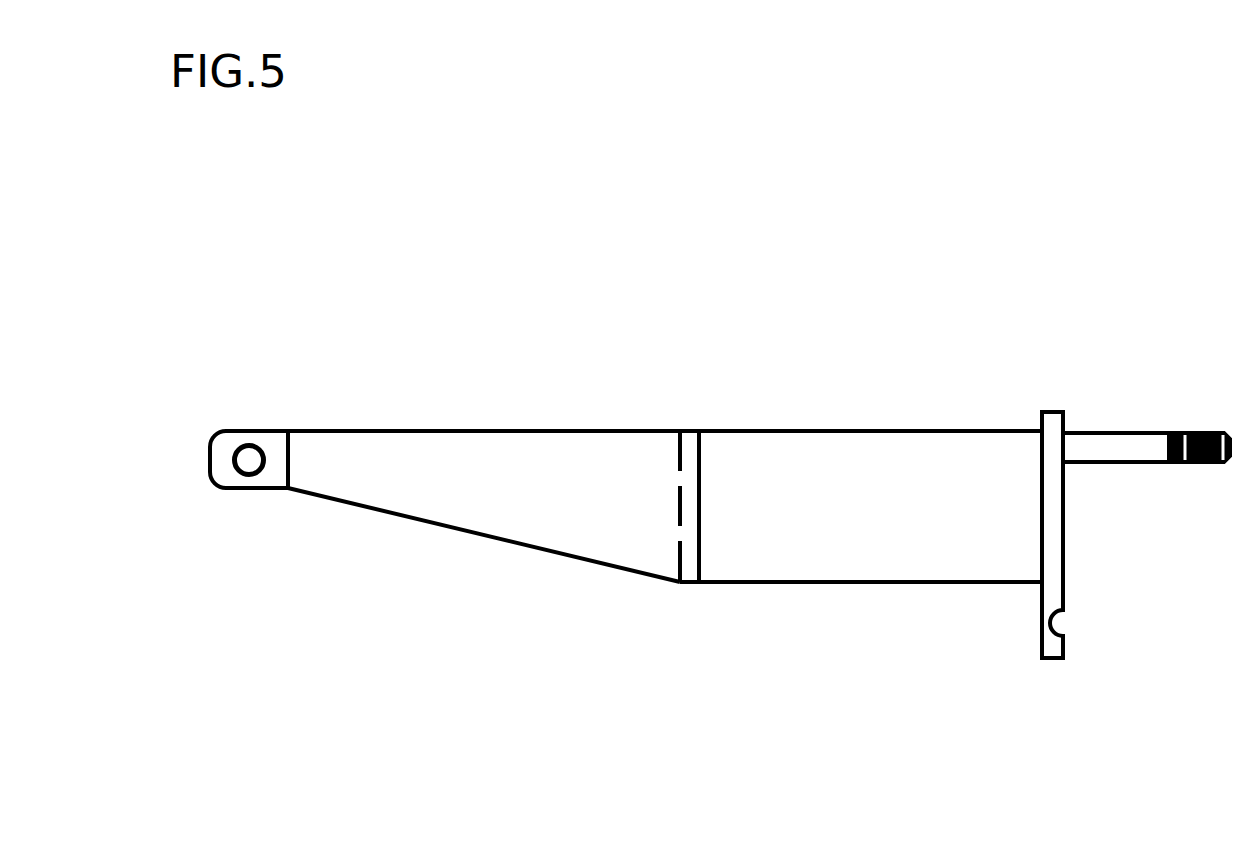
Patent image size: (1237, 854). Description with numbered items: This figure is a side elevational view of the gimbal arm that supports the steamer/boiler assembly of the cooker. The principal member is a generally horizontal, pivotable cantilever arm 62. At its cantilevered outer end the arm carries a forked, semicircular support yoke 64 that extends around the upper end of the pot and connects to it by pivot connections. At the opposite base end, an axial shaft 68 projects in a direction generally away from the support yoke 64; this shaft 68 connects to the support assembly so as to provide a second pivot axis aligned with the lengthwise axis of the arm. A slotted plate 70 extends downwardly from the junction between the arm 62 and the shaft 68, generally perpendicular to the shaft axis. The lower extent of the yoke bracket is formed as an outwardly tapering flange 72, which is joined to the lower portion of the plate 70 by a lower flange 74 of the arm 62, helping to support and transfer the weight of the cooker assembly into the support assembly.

The cantilever arm 62 is at (802, 429).
The support yoke 64 is at (448, 447).
The axial shaft 68 is at (1140, 447).
The slotted plate 70 is at (1053, 647).
The outwardly tapering flange 72 is at (585, 520).
The lower flange 74 is at (868, 555).